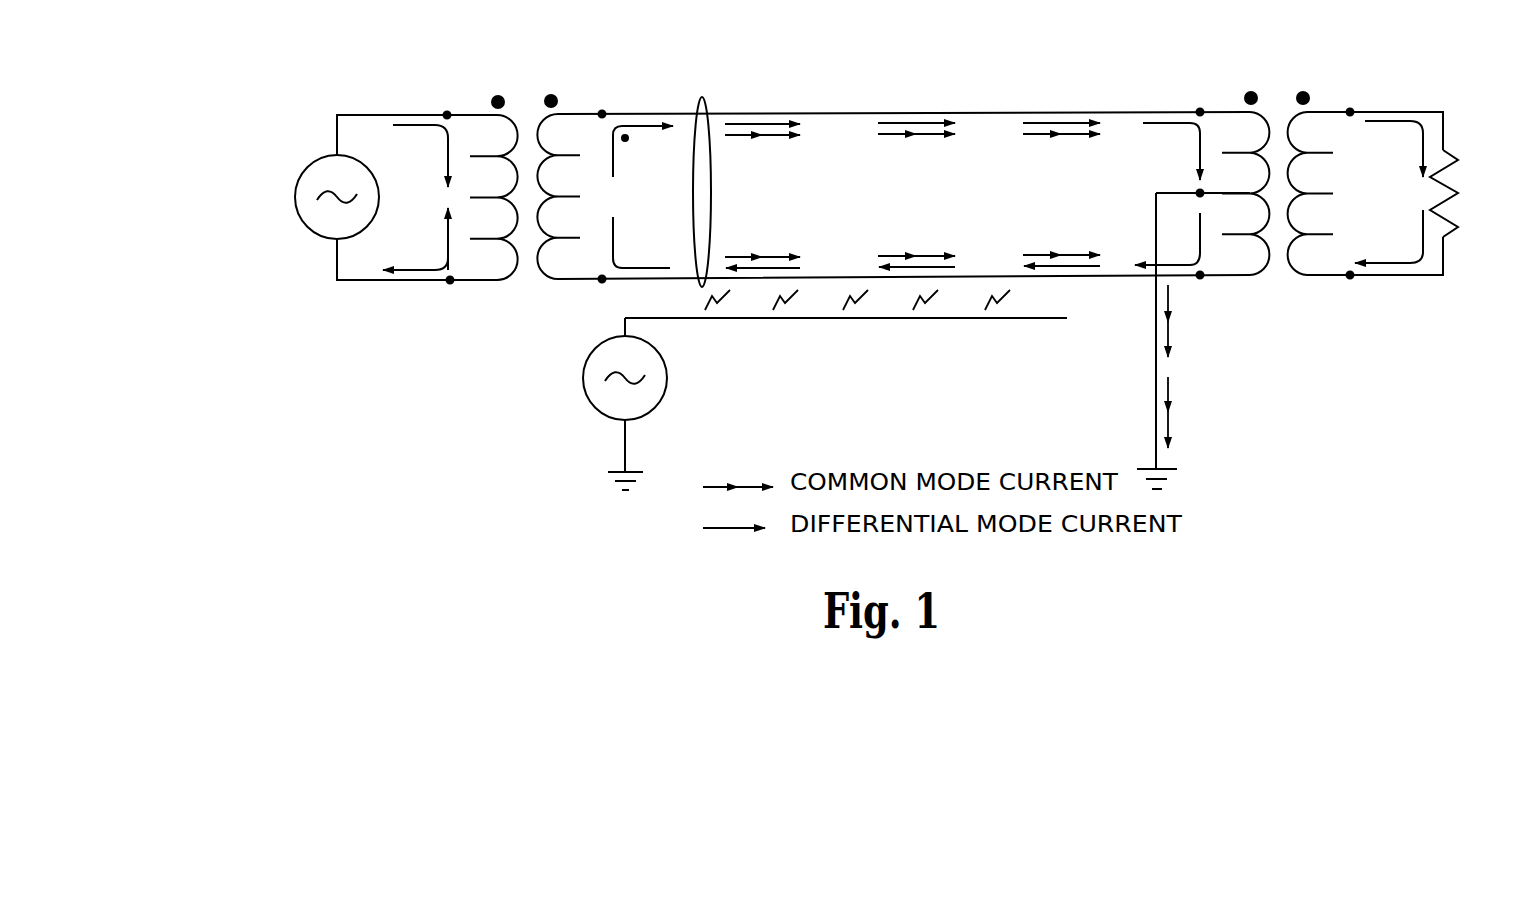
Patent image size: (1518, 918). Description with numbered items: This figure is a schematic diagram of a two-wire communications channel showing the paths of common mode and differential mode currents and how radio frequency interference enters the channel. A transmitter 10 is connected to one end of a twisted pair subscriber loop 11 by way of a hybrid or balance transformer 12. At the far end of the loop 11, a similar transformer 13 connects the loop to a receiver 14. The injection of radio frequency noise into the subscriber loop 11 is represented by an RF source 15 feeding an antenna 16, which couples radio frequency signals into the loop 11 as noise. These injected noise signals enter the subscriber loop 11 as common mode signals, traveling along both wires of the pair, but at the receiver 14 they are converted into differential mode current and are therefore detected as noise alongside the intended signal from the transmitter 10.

The transmitter 10 is at (318, 236).
The twisted pair subscriber loop 11 is at (679, 80).
The hybrid or balance transformer 12 is at (568, 100).
The transformer 13 is at (1238, 98).
The receiver 14 is at (1455, 166).
The RF source 15 is at (590, 414).
The antenna 16 is at (1068, 322).